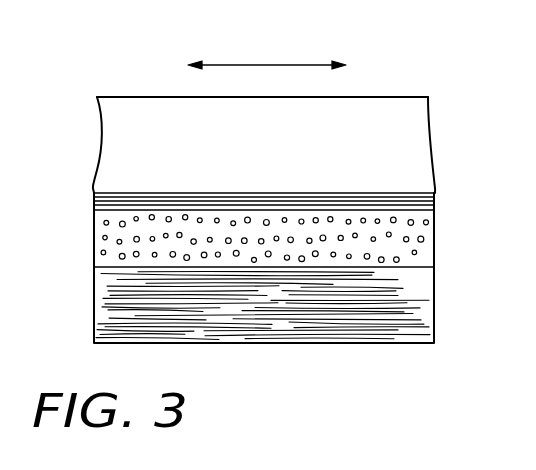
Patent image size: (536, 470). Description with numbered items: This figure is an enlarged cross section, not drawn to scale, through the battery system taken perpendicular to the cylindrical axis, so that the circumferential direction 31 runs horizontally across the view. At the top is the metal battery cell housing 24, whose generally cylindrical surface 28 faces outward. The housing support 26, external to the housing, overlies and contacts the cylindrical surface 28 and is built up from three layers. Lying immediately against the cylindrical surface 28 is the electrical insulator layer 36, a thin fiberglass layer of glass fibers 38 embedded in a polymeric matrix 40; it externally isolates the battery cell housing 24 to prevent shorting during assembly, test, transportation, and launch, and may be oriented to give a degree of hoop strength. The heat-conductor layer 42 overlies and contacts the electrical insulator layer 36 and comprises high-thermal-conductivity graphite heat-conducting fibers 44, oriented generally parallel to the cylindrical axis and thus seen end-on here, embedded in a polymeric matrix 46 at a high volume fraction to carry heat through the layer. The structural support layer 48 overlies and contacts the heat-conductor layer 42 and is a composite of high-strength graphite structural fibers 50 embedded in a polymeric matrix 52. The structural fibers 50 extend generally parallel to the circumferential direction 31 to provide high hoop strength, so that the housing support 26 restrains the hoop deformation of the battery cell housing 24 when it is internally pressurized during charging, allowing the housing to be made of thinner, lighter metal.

The battery cell housing 24 is at (106, 119).
The housing support 26 is at (88, 197).
The cylindrical surface 28 is at (410, 193).
The circumferential direction 31 is at (310, 64).
The electrical insulator layer 36 is at (441, 205).
The glass fibers 38 is at (240, 210).
The polymeric matrix 40 is at (172, 207).
The heat-conductor layer 42 is at (438, 227).
The heat-conducting fibers 44 is at (351, 218).
The polymeric matrix 46 is at (280, 217).
The structural support layer 48 is at (433, 287).
The structural fibers 50 is at (387, 345).
The polymeric matrix 52 is at (235, 312).